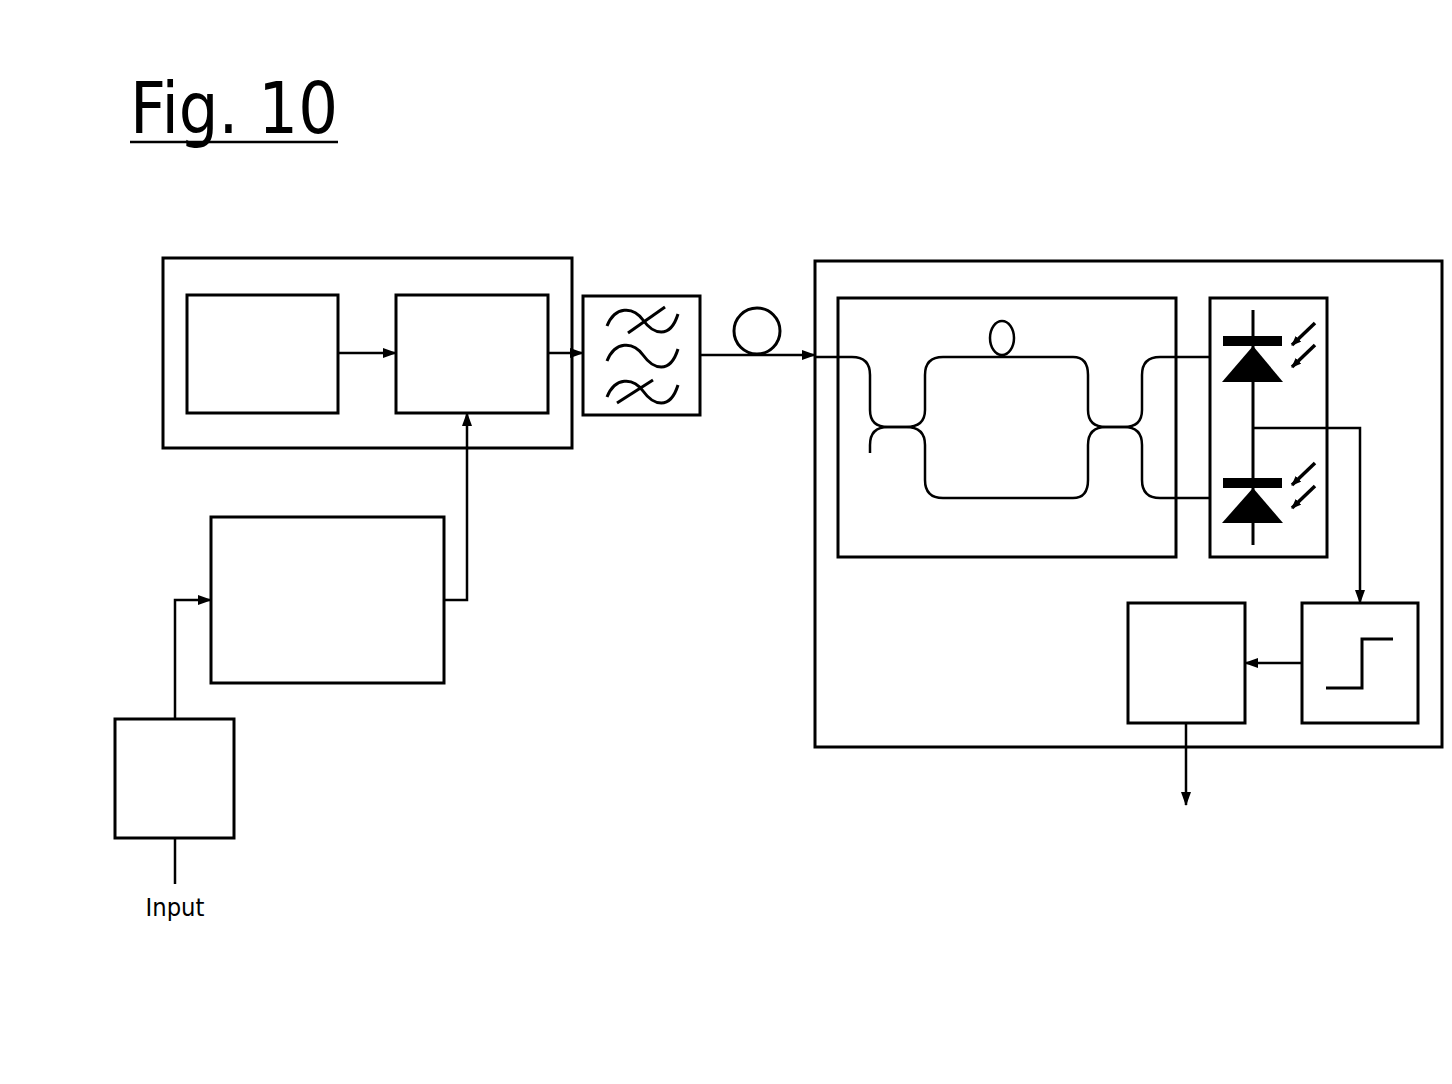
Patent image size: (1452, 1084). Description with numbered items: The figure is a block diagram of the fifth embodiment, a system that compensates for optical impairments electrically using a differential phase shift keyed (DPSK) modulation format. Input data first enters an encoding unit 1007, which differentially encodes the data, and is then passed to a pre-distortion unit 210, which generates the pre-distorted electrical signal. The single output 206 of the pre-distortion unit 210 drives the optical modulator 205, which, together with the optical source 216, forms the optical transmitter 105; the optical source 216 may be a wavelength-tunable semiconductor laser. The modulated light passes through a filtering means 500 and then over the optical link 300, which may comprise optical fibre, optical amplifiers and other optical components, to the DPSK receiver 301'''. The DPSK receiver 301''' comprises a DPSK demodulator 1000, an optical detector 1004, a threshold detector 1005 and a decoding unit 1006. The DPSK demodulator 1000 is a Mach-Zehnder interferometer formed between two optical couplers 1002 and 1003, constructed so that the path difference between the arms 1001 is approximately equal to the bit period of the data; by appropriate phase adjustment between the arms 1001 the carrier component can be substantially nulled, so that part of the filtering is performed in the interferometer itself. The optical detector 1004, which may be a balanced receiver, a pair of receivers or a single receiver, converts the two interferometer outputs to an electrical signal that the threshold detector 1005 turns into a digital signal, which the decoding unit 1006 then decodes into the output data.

The optical transmitter 105 is at (523, 413).
The optical source 216 is at (258, 295).
The optical modulator 205 is at (467, 295).
The filtering means 500 is at (630, 296).
The optical link 300 is at (757, 308).
The DPSK receiver 301''' is at (1128, 557).
The DPSK demodulator 1000 is at (1013, 298).
The arms 1001 is at (1002, 345).
The optical coupler 1002 is at (897, 438).
The optical coupler 1003 is at (1117, 438).
The optical detector 1004 is at (1247, 298).
The threshold detector 1005 is at (1383, 723).
The decoding unit 1006 is at (1140, 723).
The pre-distortion unit 210 is at (444, 639).
The single output 206 is at (467, 576).
The encoding unit 1007 is at (234, 767).